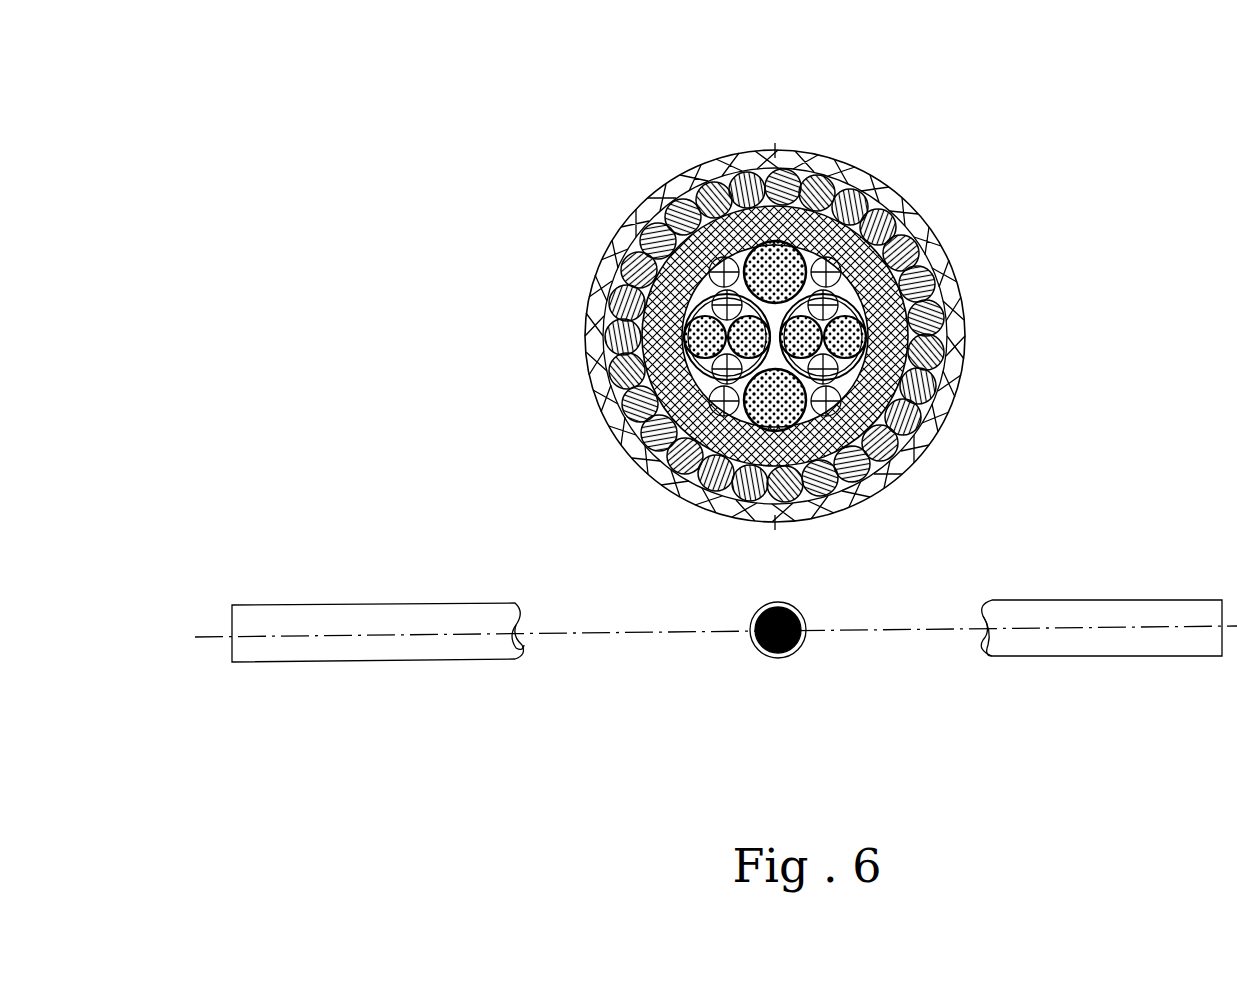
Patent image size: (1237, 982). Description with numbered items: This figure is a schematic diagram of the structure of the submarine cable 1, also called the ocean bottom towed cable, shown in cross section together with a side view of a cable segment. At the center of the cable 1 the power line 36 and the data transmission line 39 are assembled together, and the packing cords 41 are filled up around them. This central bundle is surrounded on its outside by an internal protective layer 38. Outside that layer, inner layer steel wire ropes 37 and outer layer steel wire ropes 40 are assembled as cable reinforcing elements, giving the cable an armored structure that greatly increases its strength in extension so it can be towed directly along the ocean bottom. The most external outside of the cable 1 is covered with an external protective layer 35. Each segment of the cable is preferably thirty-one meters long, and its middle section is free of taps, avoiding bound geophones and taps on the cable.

The submarine cable 1 is at (278, 625).
The external protective layer 35 is at (590, 337).
The power line 36 is at (629, 229).
The inner layer steel wire ropes 37 is at (663, 197).
The internal protective layer 38 is at (722, 186).
The data transmission line 39 is at (807, 187).
The outer layer steel wire ropes 40 is at (890, 193).
The packing cords 41 is at (597, 267).